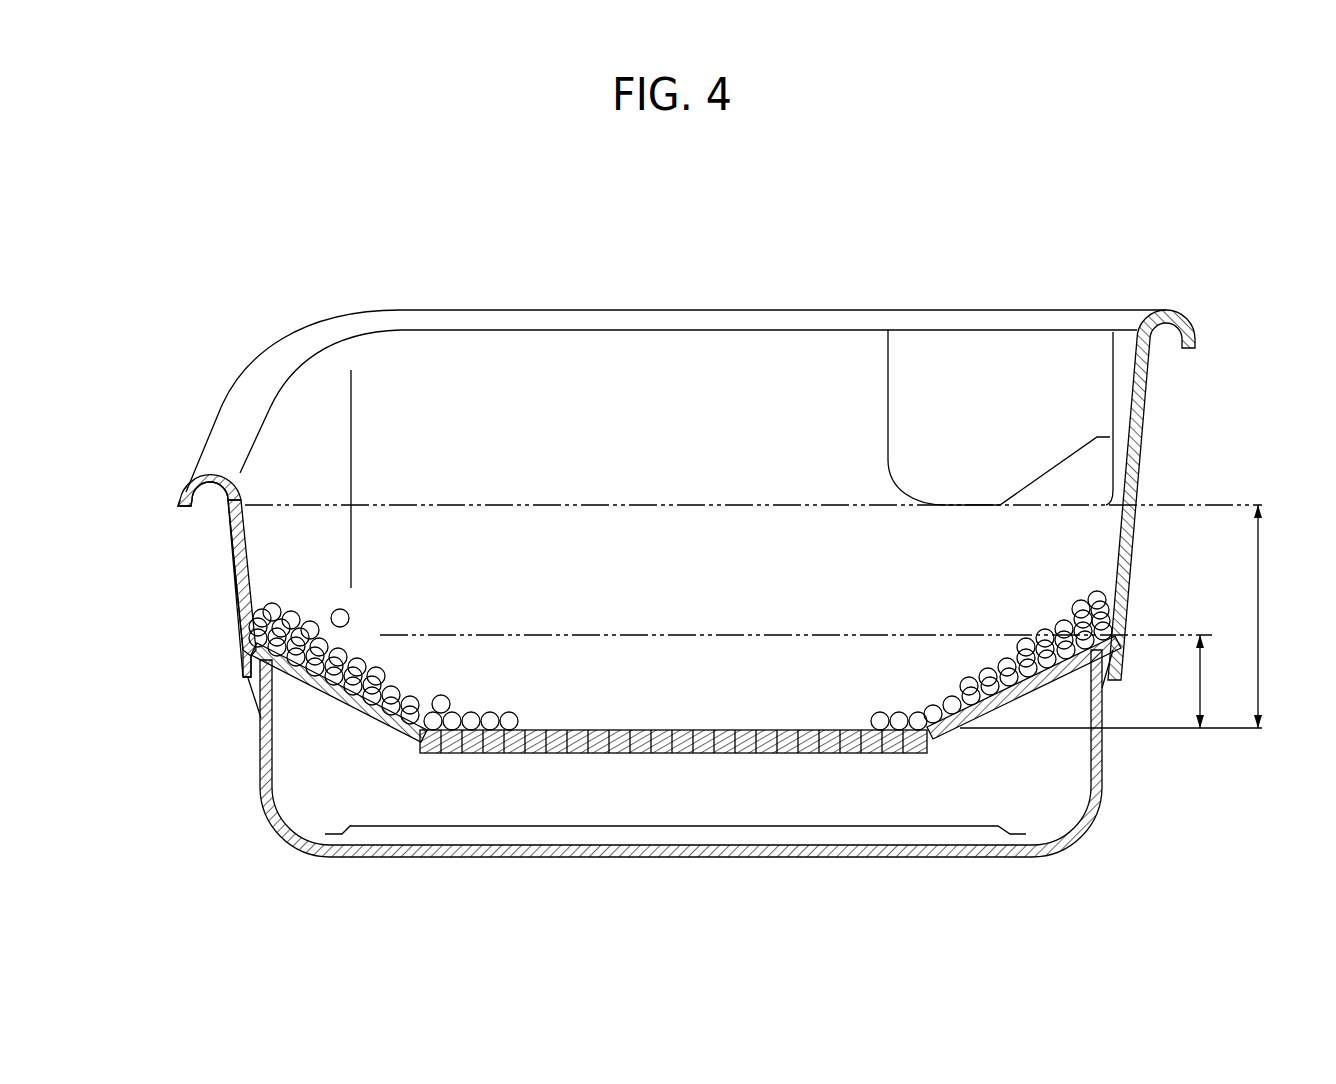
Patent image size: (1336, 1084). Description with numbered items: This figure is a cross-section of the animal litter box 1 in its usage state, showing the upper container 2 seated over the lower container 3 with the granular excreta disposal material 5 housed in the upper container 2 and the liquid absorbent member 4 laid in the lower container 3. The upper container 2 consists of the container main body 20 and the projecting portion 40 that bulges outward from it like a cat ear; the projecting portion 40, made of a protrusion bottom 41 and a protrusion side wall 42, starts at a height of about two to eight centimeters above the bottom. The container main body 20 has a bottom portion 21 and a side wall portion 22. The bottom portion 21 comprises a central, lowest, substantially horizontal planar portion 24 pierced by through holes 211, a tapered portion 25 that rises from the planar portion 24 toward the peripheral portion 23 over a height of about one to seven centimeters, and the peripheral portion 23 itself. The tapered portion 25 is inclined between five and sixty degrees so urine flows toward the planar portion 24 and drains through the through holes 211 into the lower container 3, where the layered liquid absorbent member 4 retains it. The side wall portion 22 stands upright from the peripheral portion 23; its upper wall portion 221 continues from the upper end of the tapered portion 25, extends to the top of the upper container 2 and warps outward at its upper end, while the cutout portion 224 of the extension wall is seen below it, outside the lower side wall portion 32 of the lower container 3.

The animal litter box 1 is at (918, 222).
The upper container 2 is at (228, 322).
The container main body 20 is at (212, 388).
The side wall portion 22 is at (262, 540).
The upper wall portion 221 is at (1125, 573).
The cutout portion 224 is at (240, 700).
The bottom portion 21 is at (420, 746).
The through holes 211 is at (490, 755).
The peripheral portion 23 is at (1105, 612).
The planar portion 24 is at (682, 728).
The tapered portion 25 is at (950, 695).
The excreta disposal material 5 is at (390, 668).
The lower container 3 is at (262, 814).
The lower side wall portion 32 is at (1096, 788).
The liquid absorbent member 4 is at (970, 836).
The projecting portion 40 is at (1074, 300).
The protrusion bottom 41 is at (1083, 470).
The protrusion side wall 42 is at (1000, 376).